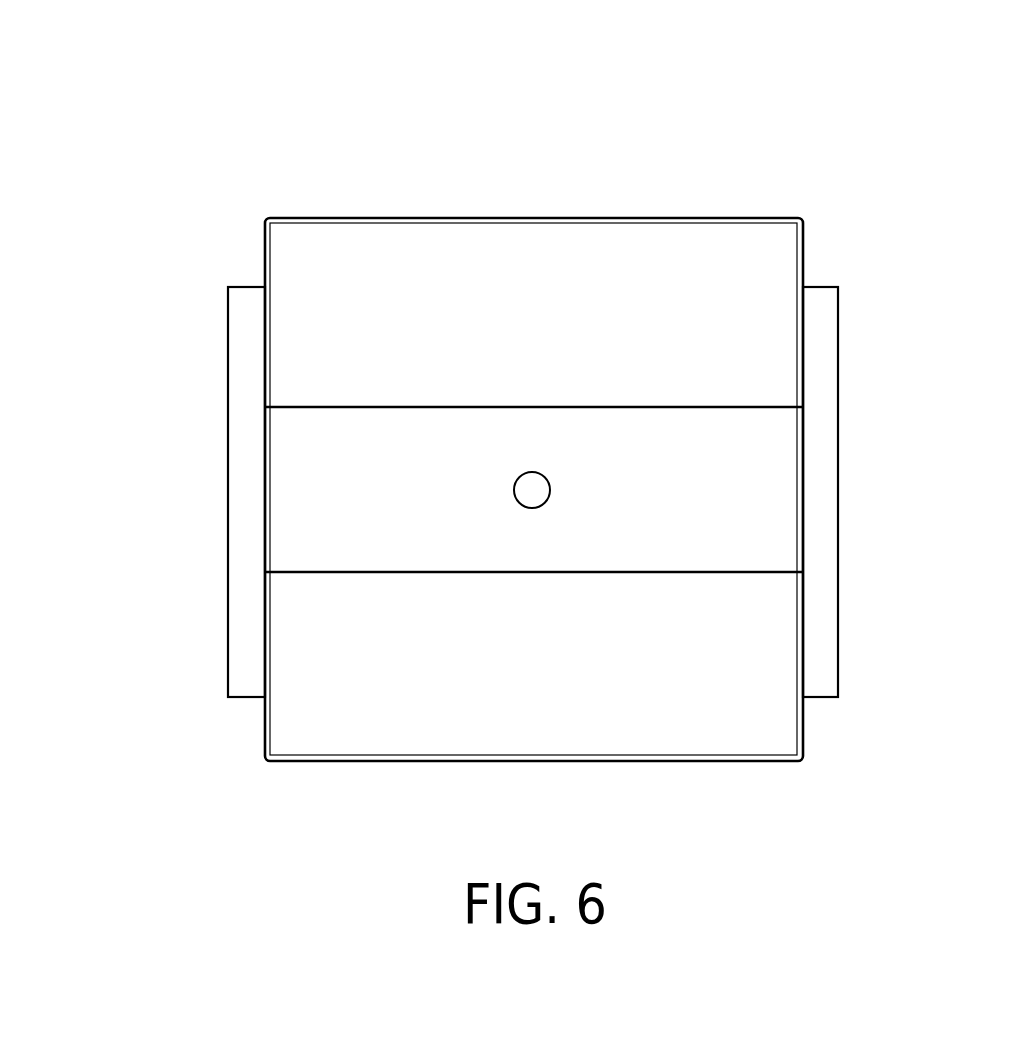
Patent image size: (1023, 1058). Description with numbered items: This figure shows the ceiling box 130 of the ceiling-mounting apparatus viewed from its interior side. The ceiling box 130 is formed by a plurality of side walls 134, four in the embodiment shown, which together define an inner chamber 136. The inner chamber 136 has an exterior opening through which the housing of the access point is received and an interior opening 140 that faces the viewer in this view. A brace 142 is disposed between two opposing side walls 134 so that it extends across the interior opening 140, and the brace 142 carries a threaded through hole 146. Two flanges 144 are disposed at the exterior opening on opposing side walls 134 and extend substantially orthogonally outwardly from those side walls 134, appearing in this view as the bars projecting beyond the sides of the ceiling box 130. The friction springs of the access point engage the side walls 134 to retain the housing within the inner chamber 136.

The ceiling box 130 is at (609, 417).
The side walls 134 is at (554, 485).
The inner chamber 136 is at (681, 323).
The interior opening 140 is at (589, 703).
The brace 142 is at (534, 455).
The flanges 144 is at (534, 492).
The threaded through hole 146 is at (629, 515).